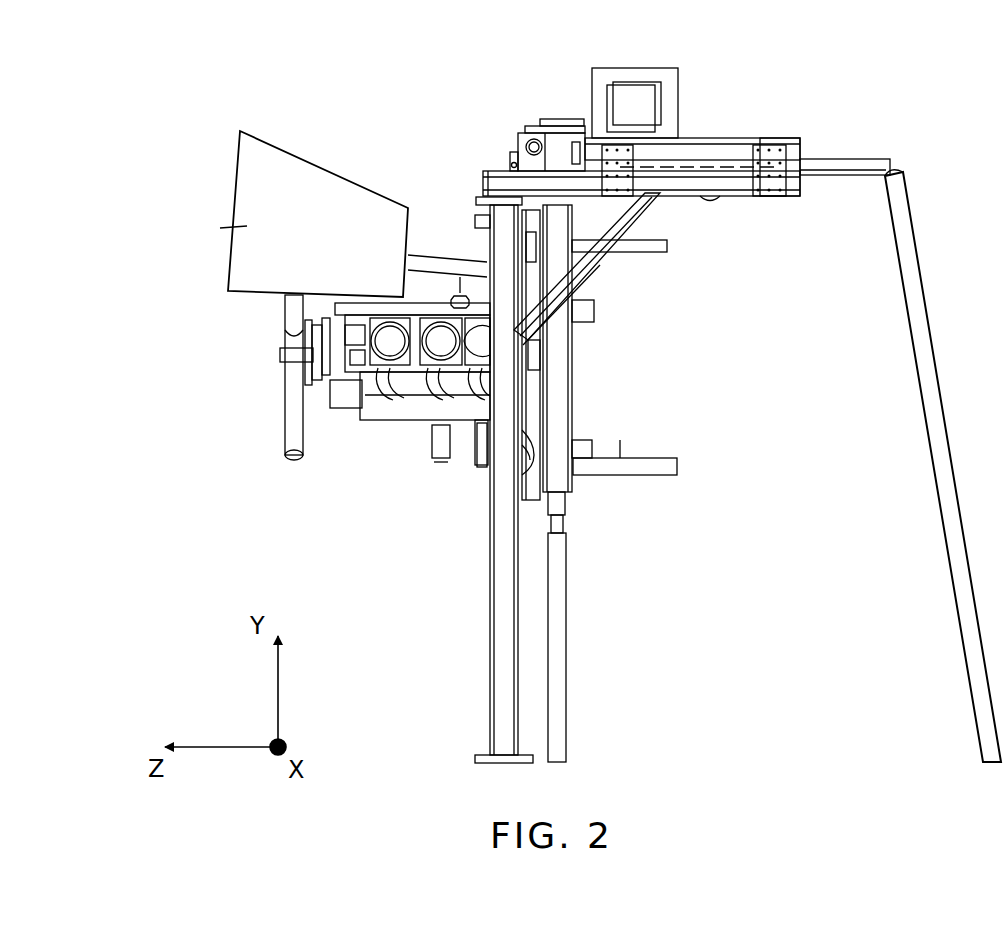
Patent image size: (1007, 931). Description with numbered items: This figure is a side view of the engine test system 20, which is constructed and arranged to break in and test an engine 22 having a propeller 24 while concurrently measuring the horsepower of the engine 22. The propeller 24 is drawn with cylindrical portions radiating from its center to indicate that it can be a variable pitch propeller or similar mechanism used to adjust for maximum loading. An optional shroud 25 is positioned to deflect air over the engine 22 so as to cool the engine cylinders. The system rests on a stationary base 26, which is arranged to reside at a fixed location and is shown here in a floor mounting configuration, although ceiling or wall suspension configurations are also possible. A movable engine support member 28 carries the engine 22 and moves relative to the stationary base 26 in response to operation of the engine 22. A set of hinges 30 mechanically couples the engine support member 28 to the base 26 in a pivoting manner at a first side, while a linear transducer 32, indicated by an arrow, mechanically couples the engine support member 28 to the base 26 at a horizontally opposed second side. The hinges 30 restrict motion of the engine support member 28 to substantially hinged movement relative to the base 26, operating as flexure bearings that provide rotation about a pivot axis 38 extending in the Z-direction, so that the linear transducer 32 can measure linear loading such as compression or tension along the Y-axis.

The engine test system 20 is at (920, 100).
The engine 22 is at (243, 395).
The propeller 24 is at (282, 430).
The shroud 25 is at (245, 230).
The stationary base 26 is at (490, 645).
The movable engine support member 28 is at (768, 118).
The hinges 30 is at (752, 348).
The linear transducer 32 is at (487, 134).
The pivot axis 38 is at (820, 163).